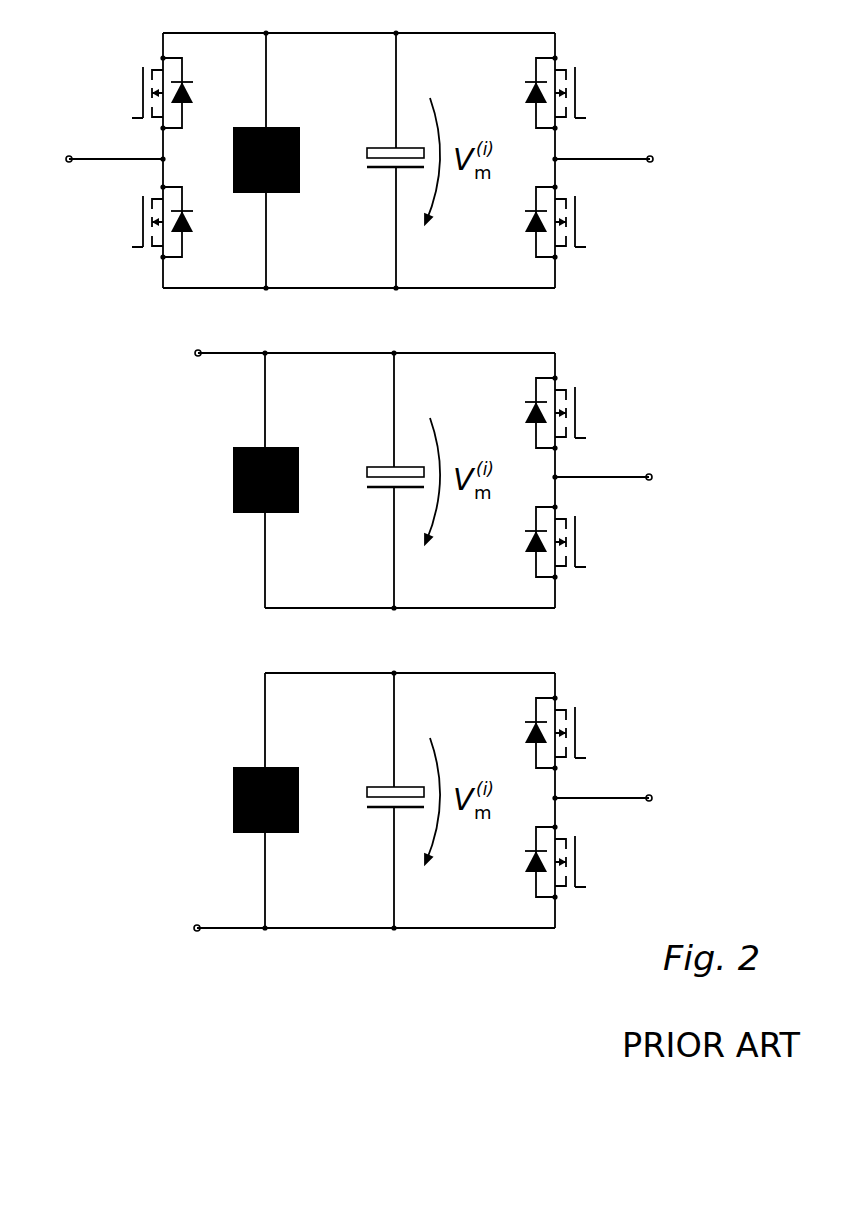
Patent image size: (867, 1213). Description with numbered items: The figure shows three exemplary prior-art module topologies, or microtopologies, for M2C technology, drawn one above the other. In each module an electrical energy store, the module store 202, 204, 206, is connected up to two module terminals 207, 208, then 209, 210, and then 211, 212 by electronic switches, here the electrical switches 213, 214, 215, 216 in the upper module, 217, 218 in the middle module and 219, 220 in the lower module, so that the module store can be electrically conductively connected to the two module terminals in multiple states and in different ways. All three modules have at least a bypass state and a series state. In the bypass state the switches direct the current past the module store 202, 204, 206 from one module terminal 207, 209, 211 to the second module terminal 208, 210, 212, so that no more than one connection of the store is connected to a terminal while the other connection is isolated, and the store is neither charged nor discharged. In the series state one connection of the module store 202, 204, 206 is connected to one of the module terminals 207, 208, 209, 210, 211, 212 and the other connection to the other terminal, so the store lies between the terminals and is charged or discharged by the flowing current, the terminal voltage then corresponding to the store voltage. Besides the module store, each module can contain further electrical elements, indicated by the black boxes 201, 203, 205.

The black box 201 is at (280, 115).
The module store 202 is at (367, 182).
The black box 203 is at (232, 522).
The module store 204 is at (368, 500).
The module energy storage element 205 is at (292, 750).
The module store 206 is at (360, 822).
The module terminal 207 is at (63, 172).
The module terminal 208 is at (653, 138).
The module terminal 209 is at (195, 360).
The module terminal 210 is at (654, 463).
The module terminal 211 is at (195, 907).
The module terminal 212 is at (653, 785).
The electrical switch 213 is at (127, 67).
The electrical switch 214 is at (120, 255).
The electrical switch 215 is at (583, 63).
The electrical switch 216 is at (588, 253).
The electrical switch 217 is at (582, 380).
The electrical switch 218 is at (587, 568).
The electrical switch 219 is at (592, 702).
The electrical switch 220 is at (597, 893).